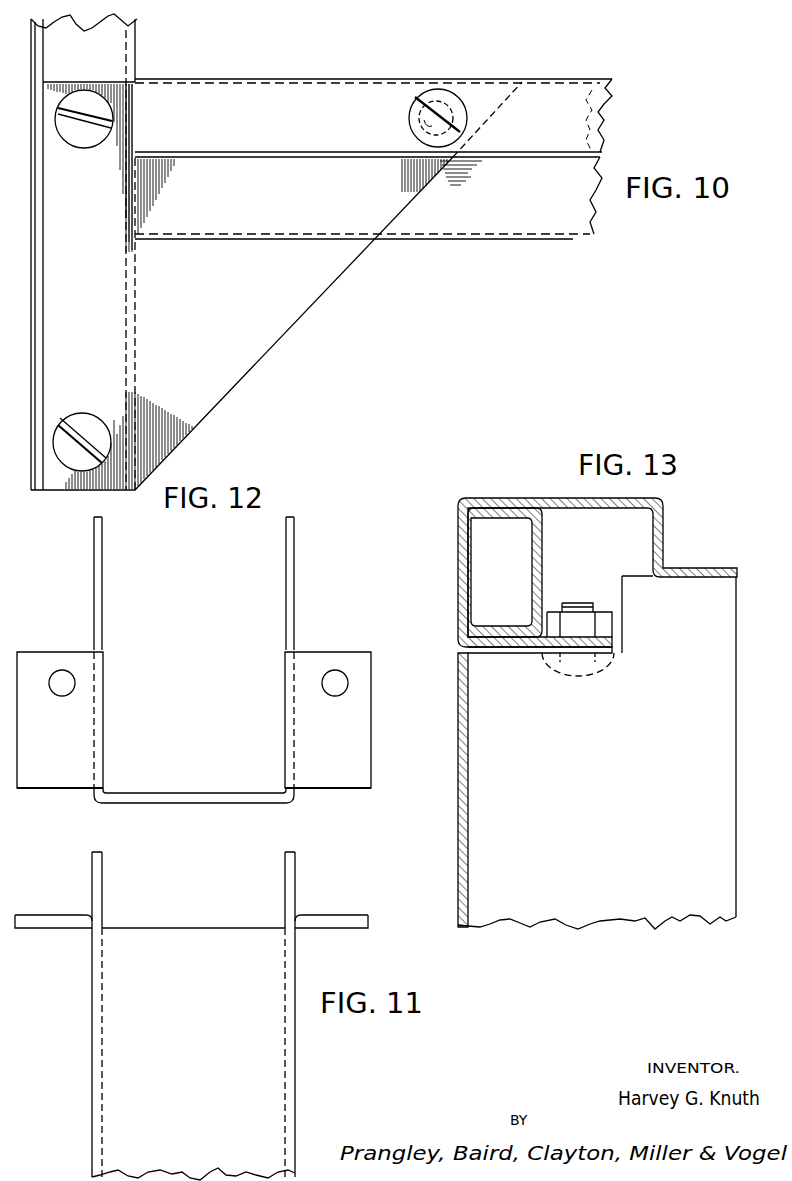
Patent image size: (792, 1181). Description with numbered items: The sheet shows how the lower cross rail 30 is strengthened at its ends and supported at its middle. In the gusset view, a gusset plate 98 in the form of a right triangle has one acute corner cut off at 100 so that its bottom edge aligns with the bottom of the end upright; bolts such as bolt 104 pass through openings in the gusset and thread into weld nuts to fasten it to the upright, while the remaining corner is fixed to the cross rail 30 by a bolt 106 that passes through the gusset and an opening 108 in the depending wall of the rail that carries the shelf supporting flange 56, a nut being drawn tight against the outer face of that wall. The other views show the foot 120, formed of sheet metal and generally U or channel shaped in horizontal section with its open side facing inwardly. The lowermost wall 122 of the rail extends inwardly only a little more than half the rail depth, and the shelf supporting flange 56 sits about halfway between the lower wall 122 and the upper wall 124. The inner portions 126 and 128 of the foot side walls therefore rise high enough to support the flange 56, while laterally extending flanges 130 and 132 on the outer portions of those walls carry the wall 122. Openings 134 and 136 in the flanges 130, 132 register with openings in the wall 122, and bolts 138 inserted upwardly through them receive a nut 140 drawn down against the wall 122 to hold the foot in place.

In FIG. 13, the lower cross rail 30 is at (458, 566).
In FIG. 13, the shelf supporting flange 56 is at (707, 568).
In FIG. 10, the gusset plate 98 is at (320, 283).
In FIG. 10, the cut-off corner 100 is at (62, 493).
In FIG. 10, the bolt 104 is at (70, 131).
In FIG. 10, the bolt 106 is at (412, 100).
In FIG. 10, the opening 108 is at (420, 127).
In FIG. 12, the foot 120 is at (212, 803).
In FIG. 11, the foot 120 is at (92, 1040).
In FIG. 13, the foot 120 is at (458, 853).
In FIG. 13, the lowermost wall 122 is at (510, 645).
In FIG. 13, the upper wall 124 is at (486, 497).
In FIG. 12, the inner side wall portion 126 is at (286, 570).
In FIG. 11, the inner side wall portion 126 is at (285, 893).
In FIG. 12, the inner side wall portion 128 is at (93, 557).
In FIG. 11, the inner side wall portion 128 is at (102, 899).
In FIG. 13, the inner side wall portion 128 is at (713, 596).
In FIG. 12, the laterally extending flange 130 is at (348, 660).
In FIG. 11, the laterally extending flange 130 is at (345, 925).
In FIG. 12, the laterally extending flange 132 is at (33, 660).
In FIG. 11, the laterally extending flange 132 is at (53, 887).
In FIG. 12, the opening 134 is at (333, 697).
In FIG. 12, the opening 136 is at (62, 697).
In FIG. 13, the bolt 138 is at (590, 667).
In FIG. 13, the nut 140 is at (603, 620).